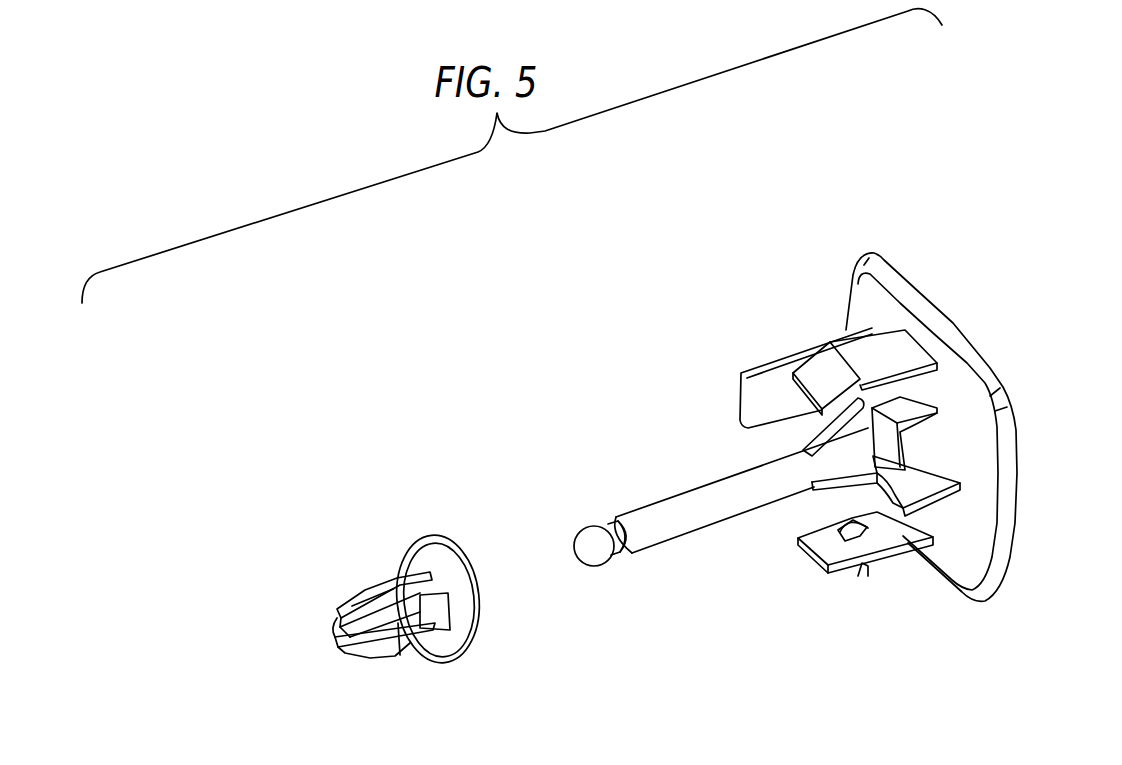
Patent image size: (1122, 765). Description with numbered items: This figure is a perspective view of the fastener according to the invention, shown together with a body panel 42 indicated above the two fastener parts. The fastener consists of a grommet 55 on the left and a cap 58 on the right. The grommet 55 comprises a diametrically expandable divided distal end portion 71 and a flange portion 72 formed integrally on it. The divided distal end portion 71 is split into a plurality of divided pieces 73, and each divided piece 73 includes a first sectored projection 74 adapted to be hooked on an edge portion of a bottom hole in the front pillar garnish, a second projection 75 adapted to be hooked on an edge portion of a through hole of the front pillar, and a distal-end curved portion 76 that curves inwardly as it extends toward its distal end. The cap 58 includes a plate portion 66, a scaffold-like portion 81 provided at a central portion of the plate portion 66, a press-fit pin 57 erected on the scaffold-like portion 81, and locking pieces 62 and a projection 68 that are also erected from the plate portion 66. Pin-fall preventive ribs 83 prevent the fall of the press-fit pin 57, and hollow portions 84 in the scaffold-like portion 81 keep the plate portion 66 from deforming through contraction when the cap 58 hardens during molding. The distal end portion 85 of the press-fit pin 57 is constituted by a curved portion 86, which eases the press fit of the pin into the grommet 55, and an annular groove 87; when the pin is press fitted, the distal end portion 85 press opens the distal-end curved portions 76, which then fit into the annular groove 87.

The vehicle body panel 42 is at (460, 290).
The grommet 55 is at (384, 570).
The press-fit pin 57 is at (713, 533).
The cap 58 is at (954, 430).
The locking piece 62 is at (820, 340).
The plate portion 66 is at (988, 603).
The projection 68 is at (752, 370).
The divided distal end portion 71 is at (348, 583).
The flange portion 72 is at (461, 552).
The divided piece 73 is at (382, 584).
The first sectored projection 74 is at (403, 568).
The second projection 75 is at (362, 585).
The distal-end curved portion 76 is at (337, 610).
The scaffold-like portion 81 is at (907, 405).
The pin-fall preventive rib 83 is at (805, 442).
The hollow portion 84 is at (924, 456).
The distal end portion 85 is at (588, 523).
The curved portion 86 is at (580, 555).
The annular groove 87 is at (617, 553).